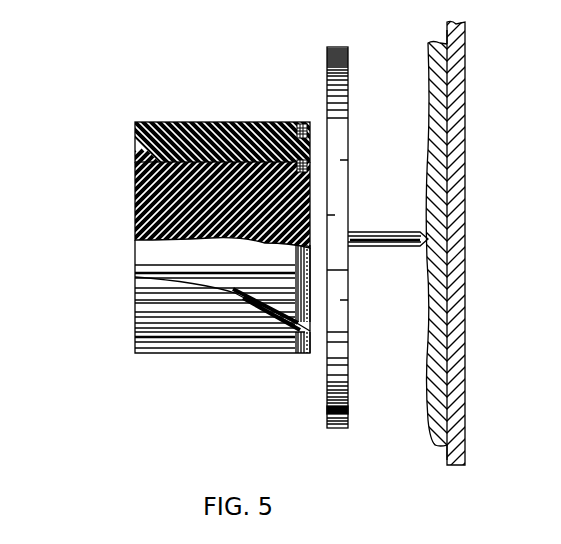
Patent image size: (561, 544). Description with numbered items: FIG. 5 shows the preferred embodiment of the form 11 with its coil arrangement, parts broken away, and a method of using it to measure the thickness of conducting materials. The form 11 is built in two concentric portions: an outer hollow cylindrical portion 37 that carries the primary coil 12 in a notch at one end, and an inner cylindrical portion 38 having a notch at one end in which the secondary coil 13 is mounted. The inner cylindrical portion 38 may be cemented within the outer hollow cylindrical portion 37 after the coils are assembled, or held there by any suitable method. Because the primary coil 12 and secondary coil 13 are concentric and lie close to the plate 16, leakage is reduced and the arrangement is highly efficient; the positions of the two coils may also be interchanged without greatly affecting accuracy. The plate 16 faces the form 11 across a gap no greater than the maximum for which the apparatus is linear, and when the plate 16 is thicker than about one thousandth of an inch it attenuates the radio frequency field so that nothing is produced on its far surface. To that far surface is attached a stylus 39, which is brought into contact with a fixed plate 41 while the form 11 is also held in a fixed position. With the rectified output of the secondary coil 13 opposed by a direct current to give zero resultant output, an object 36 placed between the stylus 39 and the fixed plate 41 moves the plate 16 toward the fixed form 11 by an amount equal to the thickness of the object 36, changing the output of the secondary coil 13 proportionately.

The form 11 is at (221, 248).
The primary coil 12 is at (300, 354).
The secondary coil 13 is at (299, 265).
The plate 16 is at (340, 109).
The object 36 is at (430, 62).
The outer hollow cylindrical portion 37 is at (137, 127).
The inner cylindrical portion 38 is at (135, 228).
The stylus 39 is at (365, 232).
The fixed plate 41 is at (465, 62).